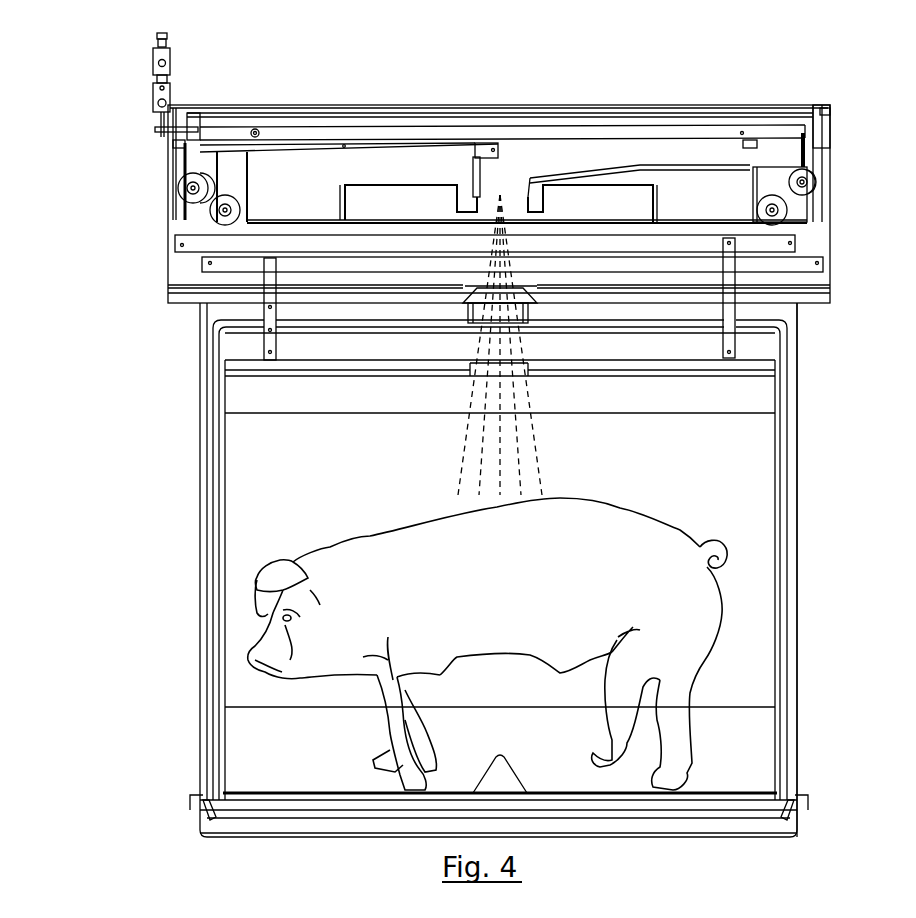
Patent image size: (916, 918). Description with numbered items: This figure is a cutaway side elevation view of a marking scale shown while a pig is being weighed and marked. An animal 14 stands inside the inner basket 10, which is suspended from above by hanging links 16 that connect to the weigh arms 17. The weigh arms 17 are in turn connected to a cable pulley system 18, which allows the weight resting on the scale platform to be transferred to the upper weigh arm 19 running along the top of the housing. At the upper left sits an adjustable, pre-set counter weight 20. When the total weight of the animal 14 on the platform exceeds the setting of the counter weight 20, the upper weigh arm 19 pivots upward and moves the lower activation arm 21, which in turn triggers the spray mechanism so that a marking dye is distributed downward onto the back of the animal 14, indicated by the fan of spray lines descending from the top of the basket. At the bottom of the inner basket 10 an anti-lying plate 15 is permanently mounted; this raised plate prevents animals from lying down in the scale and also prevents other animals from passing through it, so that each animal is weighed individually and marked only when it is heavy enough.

The inner basket 10 is at (258, 457).
The animal 14 is at (695, 582).
The anti-lying plate 15 is at (771, 789).
The hanging links 16 is at (269, 307).
The weigh arms 17 is at (798, 260).
The cable pulley system 18 is at (822, 188).
The upper weigh arm 19 is at (698, 130).
The counter weight 20 is at (178, 89).
The lower activation arm 21 is at (262, 148).